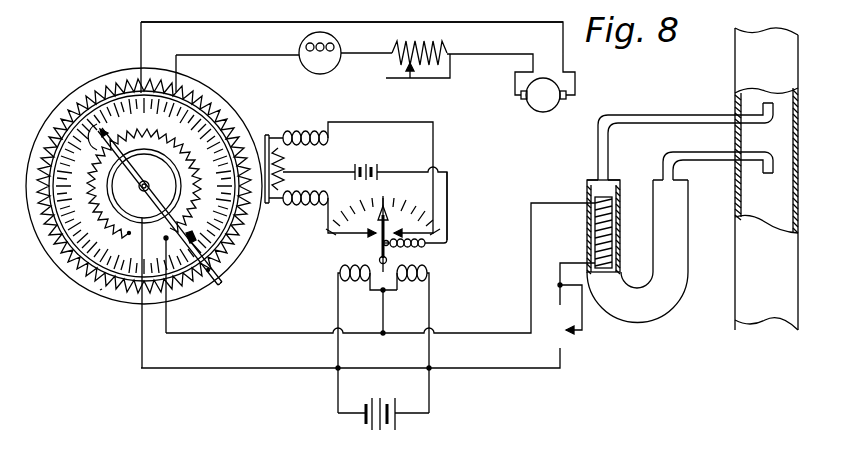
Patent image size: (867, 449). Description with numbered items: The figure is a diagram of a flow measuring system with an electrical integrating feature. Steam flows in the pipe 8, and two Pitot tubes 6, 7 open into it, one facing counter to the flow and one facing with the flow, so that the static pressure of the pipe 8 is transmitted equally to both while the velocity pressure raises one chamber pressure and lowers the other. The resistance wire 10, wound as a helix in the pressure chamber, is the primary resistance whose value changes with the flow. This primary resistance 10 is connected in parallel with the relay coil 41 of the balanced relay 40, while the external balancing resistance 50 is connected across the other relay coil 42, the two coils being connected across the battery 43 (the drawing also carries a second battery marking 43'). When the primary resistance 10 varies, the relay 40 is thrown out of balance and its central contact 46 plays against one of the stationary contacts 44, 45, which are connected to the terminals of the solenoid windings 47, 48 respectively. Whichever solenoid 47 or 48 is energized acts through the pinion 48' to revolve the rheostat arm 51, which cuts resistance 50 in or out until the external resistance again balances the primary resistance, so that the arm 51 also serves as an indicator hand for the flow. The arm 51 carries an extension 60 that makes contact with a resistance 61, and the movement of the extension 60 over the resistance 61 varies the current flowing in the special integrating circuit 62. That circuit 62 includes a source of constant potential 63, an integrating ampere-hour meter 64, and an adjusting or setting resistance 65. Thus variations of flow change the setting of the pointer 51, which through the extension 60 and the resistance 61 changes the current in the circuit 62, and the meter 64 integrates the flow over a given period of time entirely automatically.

The Pitot tube 6 is at (765, 168).
The Pitot tube 7 is at (760, 109).
The pipe 8 is at (765, 128).
The resistance wire 10 is at (592, 232).
The balanced relay 40 is at (395, 248).
The relay coil 41 is at (417, 280).
The relay coil 42 is at (352, 282).
The battery 43 is at (383, 423).
The battery 43' is at (411, 445).
The stationary contact 44 is at (448, 222).
The stationary contact 45 is at (373, 237).
The central contact 46 is at (390, 255).
The solenoid winding 47 is at (312, 100).
The solenoid winding 48 is at (321, 217).
The pinion 48' is at (359, 195).
The balancing resistance 50 is at (177, 145).
The rheostat arm 51 is at (88, 130).
The extension 60 is at (217, 274).
The resistance 61 is at (100, 290).
The integrating circuit 62 is at (266, 24).
The source of constant potential 63 is at (545, 108).
The integrating ampere-hour meter 64 is at (330, 60).
The adjusting resistance 65 is at (428, 66).